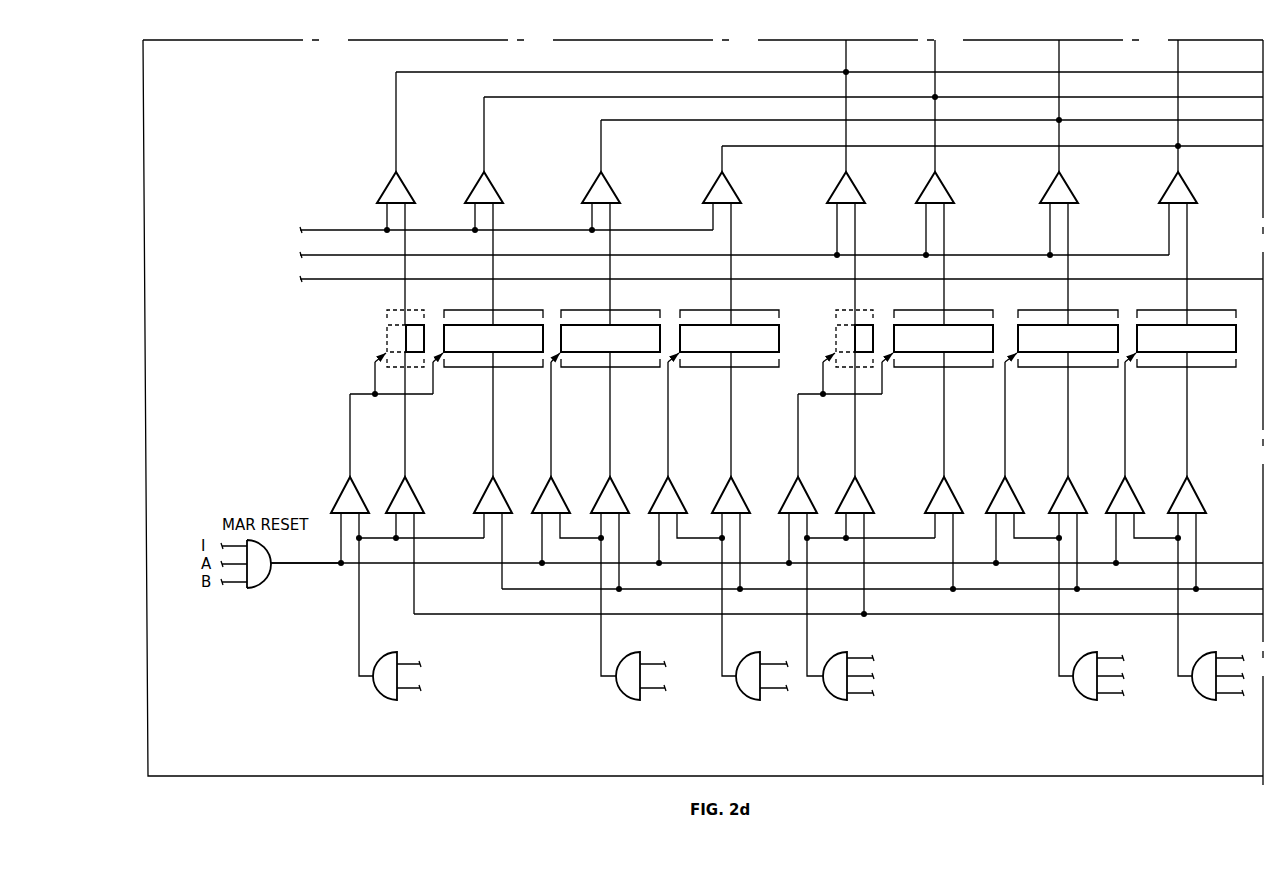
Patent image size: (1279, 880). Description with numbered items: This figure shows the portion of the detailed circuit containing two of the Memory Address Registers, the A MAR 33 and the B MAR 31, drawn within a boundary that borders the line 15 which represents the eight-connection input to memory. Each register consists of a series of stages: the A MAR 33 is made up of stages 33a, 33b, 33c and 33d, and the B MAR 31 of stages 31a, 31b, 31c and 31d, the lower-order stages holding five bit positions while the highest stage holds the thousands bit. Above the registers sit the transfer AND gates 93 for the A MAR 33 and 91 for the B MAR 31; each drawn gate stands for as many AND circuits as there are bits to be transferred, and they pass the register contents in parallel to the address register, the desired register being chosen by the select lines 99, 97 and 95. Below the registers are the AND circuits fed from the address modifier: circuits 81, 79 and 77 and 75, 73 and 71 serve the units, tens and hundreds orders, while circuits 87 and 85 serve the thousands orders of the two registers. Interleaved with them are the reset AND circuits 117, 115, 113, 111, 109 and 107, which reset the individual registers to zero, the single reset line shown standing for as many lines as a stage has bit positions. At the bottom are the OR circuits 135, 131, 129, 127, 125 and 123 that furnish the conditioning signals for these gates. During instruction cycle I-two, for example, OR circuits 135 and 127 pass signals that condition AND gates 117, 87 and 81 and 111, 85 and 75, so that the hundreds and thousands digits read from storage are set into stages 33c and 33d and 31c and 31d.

The input to memory line 15 is at (145, 491).
The B MAR 31 is at (1017, 364).
The B MAR stage 31a is at (1194, 325).
The B MAR stage 31b is at (1074, 325).
The B MAR hundreds stage 31c is at (908, 325).
The B MAR thousands stage 31d is at (861, 325).
The A MAR 33 is at (539, 367).
The A MAR stage 33a is at (738, 325).
The A MAR stage 33b is at (617, 325).
The A MAR hundreds stage 33c is at (458, 325).
The A MAR thousands stage 33d is at (411, 325).
The AND circuit 71 is at (1198, 493).
The AND circuit 73 is at (1079, 493).
The AND circuit 75 is at (955, 493).
The AND circuit 77 is at (742, 493).
The AND circuit 79 is at (621, 493).
The AND circuit 81 is at (504, 493).
The AND circuit 85 is at (866, 493).
The AND circuit 87 is at (416, 493).
The AND gate 91 is at (962, 232).
The AND gate 93 is at (518, 204).
The register select line 95 is at (336, 279).
The register select line 97 is at (363, 255).
The register select line 99 is at (330, 230).
The reset AND circuit 107 is at (1136, 493).
The reset AND circuit 109 is at (1016, 493).
The reset AND circuit 111 is at (809, 493).
The reset AND circuit 113 is at (679, 493).
The reset AND circuit 115 is at (562, 493).
The reset AND circuit 117 is at (361, 493).
The OR circuit 123 is at (1200, 656).
The OR circuit 125 is at (1081, 656).
The OR circuit 127 is at (830, 656).
The OR circuit 129 is at (740, 656).
The OR circuit 131 is at (618, 656).
The OR circuit 135 is at (375, 656).